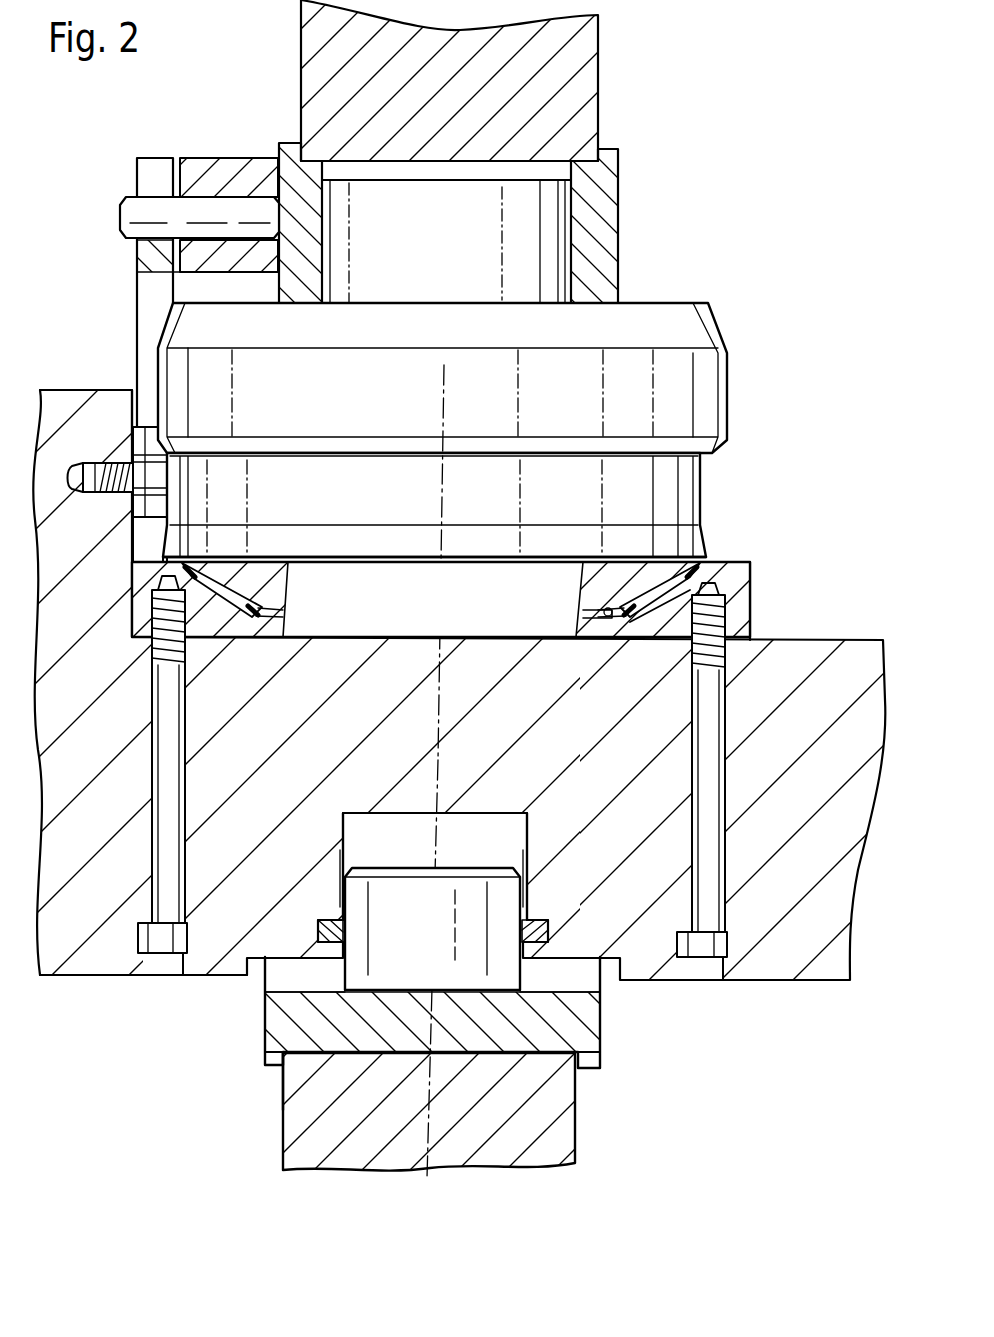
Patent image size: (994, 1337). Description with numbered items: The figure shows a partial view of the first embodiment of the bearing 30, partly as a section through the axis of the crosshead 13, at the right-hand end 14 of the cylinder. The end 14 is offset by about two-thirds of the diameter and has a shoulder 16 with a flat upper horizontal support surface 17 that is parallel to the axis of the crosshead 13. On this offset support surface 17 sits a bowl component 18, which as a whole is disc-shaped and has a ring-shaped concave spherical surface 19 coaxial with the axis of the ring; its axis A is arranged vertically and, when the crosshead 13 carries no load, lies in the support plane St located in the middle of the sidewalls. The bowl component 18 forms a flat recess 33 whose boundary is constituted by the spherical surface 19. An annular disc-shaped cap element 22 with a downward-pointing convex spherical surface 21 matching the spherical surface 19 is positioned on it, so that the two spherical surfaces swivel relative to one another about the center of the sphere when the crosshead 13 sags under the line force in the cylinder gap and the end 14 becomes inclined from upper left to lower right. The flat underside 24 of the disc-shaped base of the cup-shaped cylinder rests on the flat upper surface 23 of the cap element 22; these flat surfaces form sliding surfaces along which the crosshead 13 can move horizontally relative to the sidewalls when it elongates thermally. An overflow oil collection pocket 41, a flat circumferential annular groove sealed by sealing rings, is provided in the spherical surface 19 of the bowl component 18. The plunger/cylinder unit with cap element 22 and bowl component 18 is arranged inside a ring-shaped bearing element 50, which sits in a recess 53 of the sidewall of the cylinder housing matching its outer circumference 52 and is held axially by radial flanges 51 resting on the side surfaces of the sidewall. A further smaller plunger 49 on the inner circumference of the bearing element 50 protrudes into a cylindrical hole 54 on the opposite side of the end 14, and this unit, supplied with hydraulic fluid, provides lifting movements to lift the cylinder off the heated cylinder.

The right-hand end 14 is at (76, 388).
The crosshead 13 is at (125, 715).
The upper horizontal support surface 17 is at (838, 642).
The shoulder 16 is at (805, 608).
The bowl component 18 is at (745, 600).
The bearing 30 is at (815, 415).
The axis A is at (440, 389).
The support plane St is at (436, 712).
The flat underside 24 is at (443, 560).
The flat upper surface 23 is at (352, 556).
The cap element 22 is at (650, 580).
The convex spherical surface 21 is at (682, 638).
The concave spherical surface 19 is at (602, 615).
The flat recess 33 is at (292, 633).
The overflow oil collection pocket 41 is at (258, 630).
The cylindrical hole 54 is at (520, 832).
The plunger 49 is at (505, 895).
The ring-shaped bearing element 50 is at (603, 1018).
The recess 53 is at (595, 1040).
The radial flanges 51 is at (590, 1076).
The outer circumference 52 is at (287, 1062).